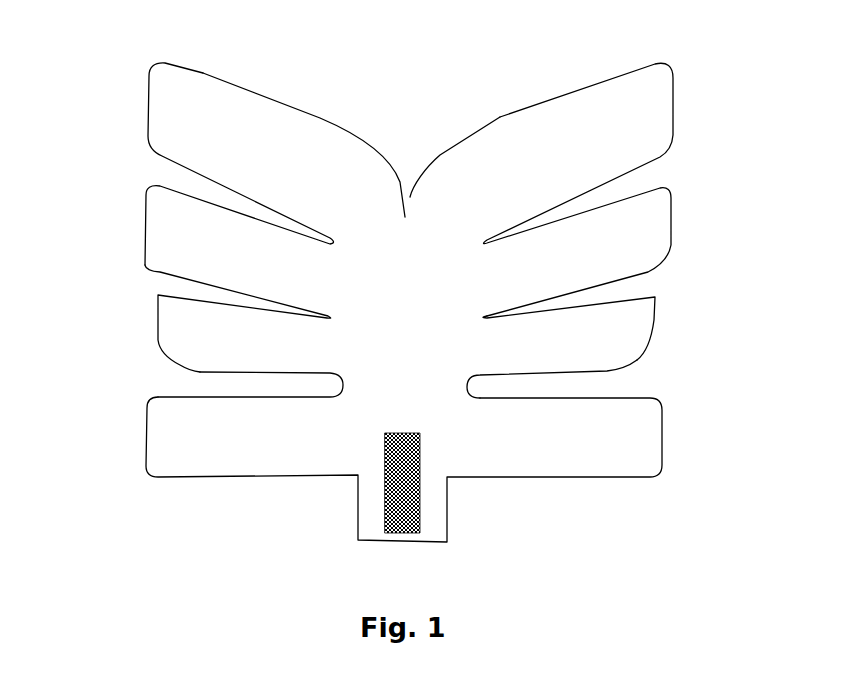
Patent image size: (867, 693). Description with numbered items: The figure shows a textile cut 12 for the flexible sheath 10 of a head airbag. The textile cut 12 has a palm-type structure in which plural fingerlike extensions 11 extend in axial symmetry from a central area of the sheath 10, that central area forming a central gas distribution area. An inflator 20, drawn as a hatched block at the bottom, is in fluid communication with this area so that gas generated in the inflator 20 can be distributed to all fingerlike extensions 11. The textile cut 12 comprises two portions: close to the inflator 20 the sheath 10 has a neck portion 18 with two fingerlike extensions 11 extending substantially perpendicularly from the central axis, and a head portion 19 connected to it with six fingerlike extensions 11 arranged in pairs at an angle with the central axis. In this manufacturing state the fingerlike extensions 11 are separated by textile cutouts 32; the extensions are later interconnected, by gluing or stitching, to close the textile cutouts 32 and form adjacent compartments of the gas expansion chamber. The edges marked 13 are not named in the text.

The flexible sheath 10 is at (402, 258).
The fingerlike extension 11 is at (657, 90).
The textile cut 12 is at (420, 349).
The contact edge 13 is at (233, 84).
The neck portion 18 is at (110, 380).
The head portion 19 is at (125, 55).
The inflator 20 is at (420, 520).
The textile cutout 32 is at (650, 177).